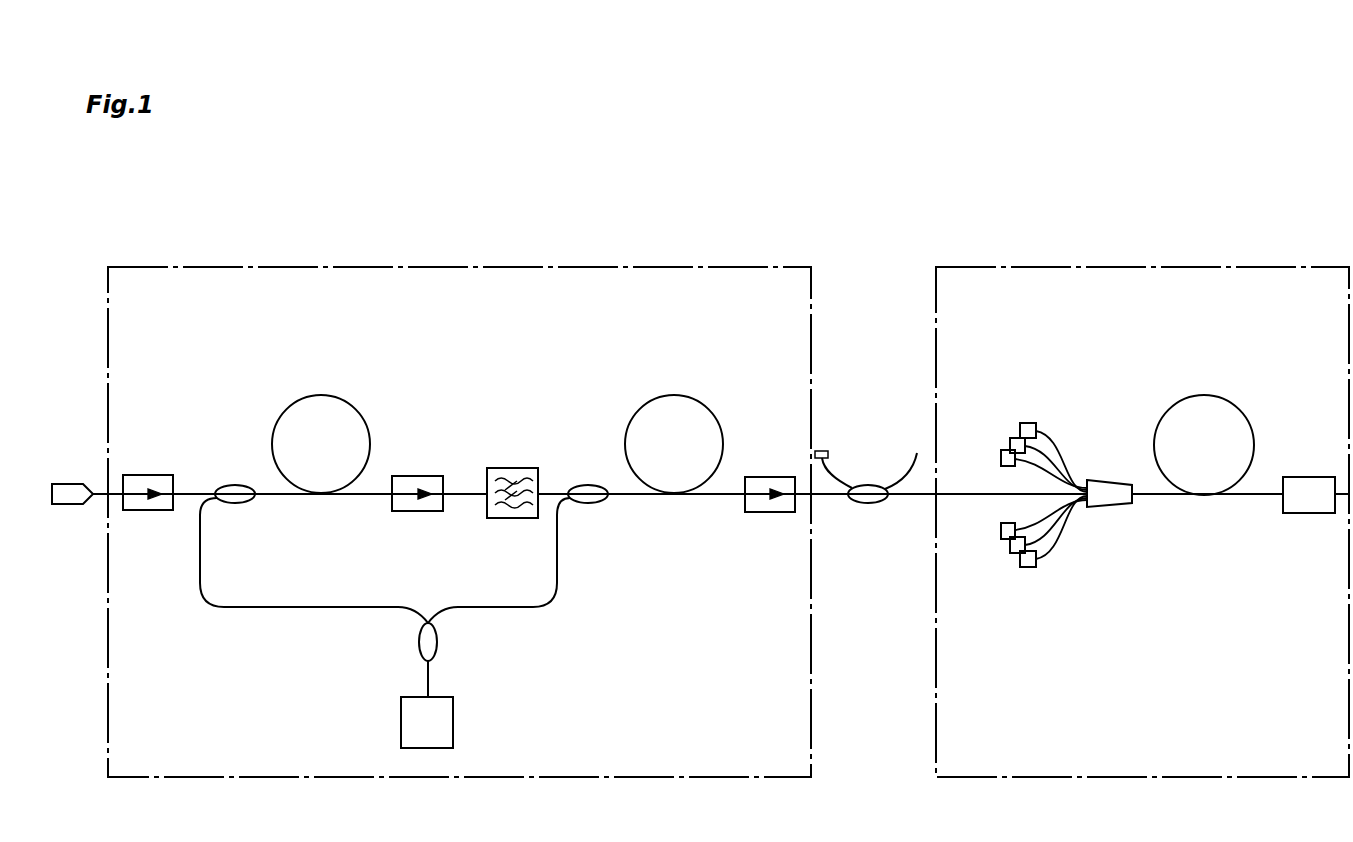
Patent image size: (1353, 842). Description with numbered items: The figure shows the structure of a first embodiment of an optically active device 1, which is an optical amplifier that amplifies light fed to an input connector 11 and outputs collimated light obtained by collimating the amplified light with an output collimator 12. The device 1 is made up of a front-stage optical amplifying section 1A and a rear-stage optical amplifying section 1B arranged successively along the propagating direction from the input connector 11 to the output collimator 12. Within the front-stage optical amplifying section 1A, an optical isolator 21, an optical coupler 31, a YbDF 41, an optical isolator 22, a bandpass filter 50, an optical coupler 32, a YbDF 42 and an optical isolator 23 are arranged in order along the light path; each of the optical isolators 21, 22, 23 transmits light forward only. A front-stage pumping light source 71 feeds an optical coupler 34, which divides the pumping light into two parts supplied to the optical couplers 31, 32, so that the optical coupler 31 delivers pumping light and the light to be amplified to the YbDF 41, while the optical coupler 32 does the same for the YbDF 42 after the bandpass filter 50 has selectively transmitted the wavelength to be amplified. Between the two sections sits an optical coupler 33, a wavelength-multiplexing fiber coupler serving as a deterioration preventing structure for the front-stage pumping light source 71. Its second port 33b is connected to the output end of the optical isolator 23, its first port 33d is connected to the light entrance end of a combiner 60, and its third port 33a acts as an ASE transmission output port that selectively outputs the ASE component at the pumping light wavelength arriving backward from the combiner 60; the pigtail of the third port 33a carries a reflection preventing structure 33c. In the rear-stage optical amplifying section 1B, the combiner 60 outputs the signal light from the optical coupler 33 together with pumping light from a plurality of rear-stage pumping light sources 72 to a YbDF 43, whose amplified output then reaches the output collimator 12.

The optically active device 1 is at (1250, 161).
The front-stage optical amplifying section 1A is at (671, 266).
The rear-stage optical amplifying section 1B is at (1258, 266).
The input connector 11 is at (70, 482).
The output collimator 12 is at (1312, 477).
The optical isolator 21 is at (152, 475).
The optical isolator 22 is at (421, 476).
The optical isolator 23 is at (775, 477).
The optical coupler 31 is at (240, 485).
The optical coupler 32 is at (592, 485).
The optical coupler 33 is at (873, 458).
The third port 33a is at (828, 466).
The second port 33b is at (830, 497).
The reflection preventing structure 33c is at (818, 450).
The first port 33d is at (903, 497).
The optical coupler 34 is at (438, 642).
The YbDF 41 is at (324, 395).
The YbDF 42 is at (676, 395).
The YbDF 43 is at (1205, 395).
The bandpass filter 50 is at (516, 468).
The combiner 60 is at (1106, 480).
The front-stage pumping light source 71 is at (453, 720).
The rear-stage pumping light sources 72 is at (1001, 452).